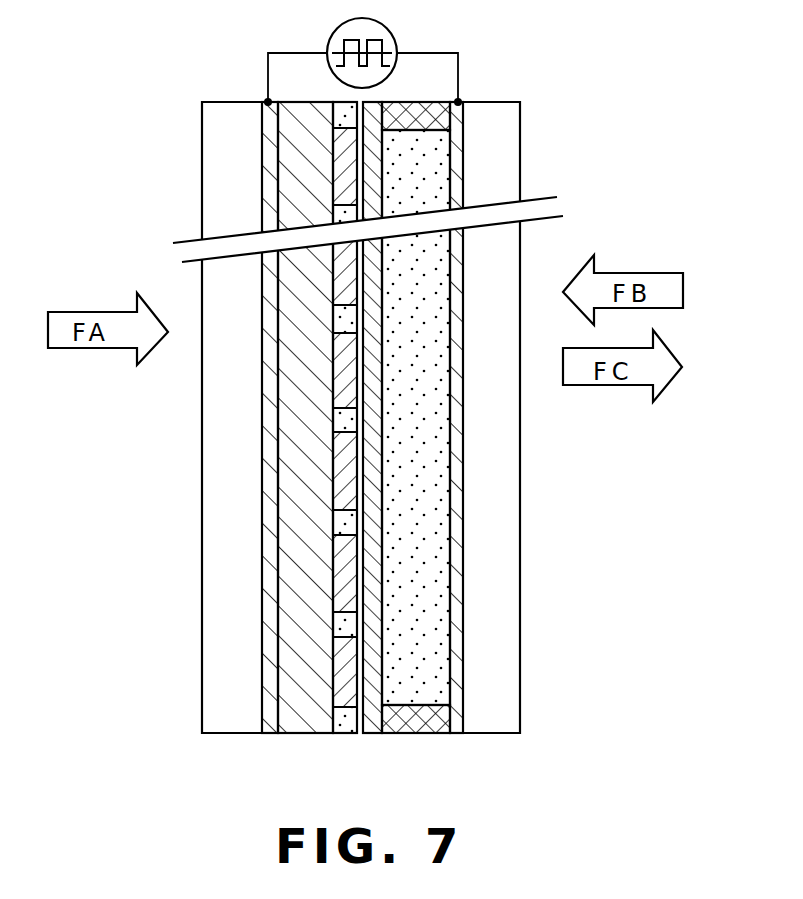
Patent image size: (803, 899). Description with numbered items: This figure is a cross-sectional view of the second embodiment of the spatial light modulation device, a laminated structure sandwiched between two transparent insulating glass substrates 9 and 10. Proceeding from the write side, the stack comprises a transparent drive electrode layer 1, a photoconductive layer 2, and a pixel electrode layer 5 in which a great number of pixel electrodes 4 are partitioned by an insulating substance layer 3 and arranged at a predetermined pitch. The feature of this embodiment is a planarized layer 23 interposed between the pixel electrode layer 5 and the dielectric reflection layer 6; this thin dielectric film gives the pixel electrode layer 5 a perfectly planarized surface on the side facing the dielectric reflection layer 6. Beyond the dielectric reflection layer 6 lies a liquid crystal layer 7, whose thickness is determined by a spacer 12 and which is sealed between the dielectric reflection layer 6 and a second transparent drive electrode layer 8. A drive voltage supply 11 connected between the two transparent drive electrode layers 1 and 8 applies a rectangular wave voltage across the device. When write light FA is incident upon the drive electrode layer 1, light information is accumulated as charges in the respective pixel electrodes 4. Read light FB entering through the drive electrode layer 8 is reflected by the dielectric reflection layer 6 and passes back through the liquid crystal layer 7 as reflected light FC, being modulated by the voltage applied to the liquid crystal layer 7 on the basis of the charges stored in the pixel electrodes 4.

The transparent drive electrode layer 1 is at (262, 383).
The photoconductive layer 2 is at (300, 450).
The insulating substance layer 3 is at (347, 522).
The pixel electrode 4 is at (345, 576).
The pixel electrode layer 5 is at (333, 737).
The dielectric reflection layer 6 is at (375, 440).
The liquid crystal layer 7 is at (417, 507).
The transparent drive electrode layer 8 is at (462, 612).
The transparent insulating substrate 9 is at (232, 670).
The transparent insulating substrate 10 is at (493, 672).
The drive voltage supply 11 is at (396, 40).
The spacer 12 is at (423, 131).
The planarized layer 23 is at (347, 537).